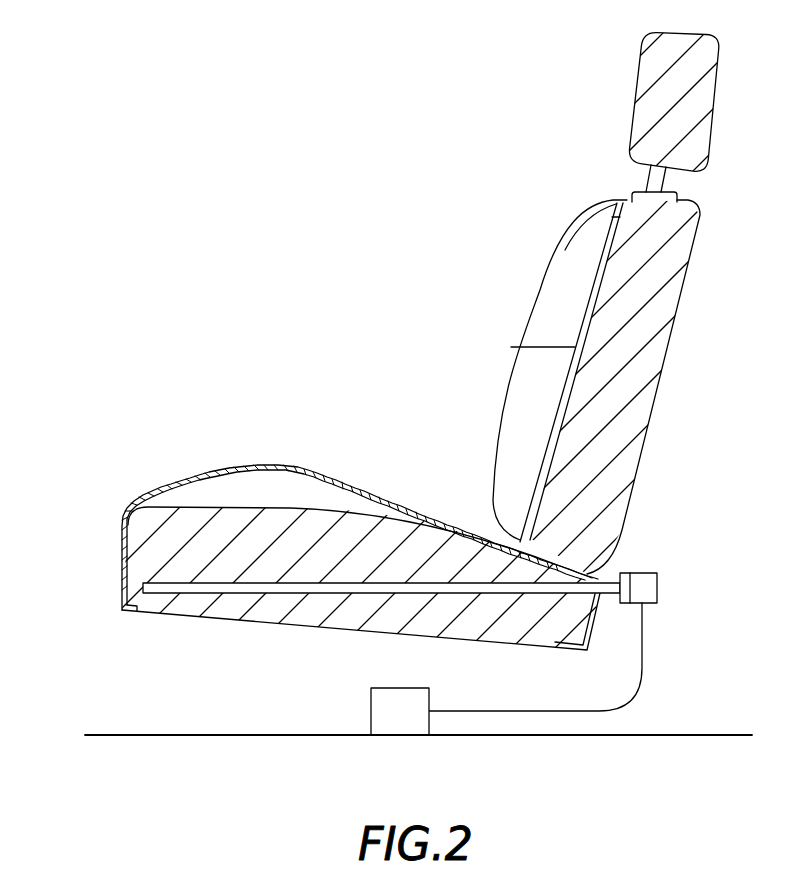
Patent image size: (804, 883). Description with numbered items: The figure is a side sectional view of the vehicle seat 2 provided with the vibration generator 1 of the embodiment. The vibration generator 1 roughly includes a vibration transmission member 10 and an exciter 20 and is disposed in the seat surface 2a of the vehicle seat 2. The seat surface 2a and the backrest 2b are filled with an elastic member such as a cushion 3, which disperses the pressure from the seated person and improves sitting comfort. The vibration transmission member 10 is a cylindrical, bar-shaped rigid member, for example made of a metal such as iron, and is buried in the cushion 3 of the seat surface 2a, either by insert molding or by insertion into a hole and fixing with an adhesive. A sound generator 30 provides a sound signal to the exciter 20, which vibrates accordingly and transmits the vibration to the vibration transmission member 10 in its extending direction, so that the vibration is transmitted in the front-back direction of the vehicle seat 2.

The vibration generator 1 is at (425, 611).
The vehicle seat 2 is at (402, 340).
The seat surface 2a is at (373, 529).
The backrest 2b is at (522, 330).
The cushion 3 is at (145, 558).
The vibration transmission member 10 is at (217, 594).
The exciter 20 is at (643, 573).
The sound generator 30 is at (429, 702).